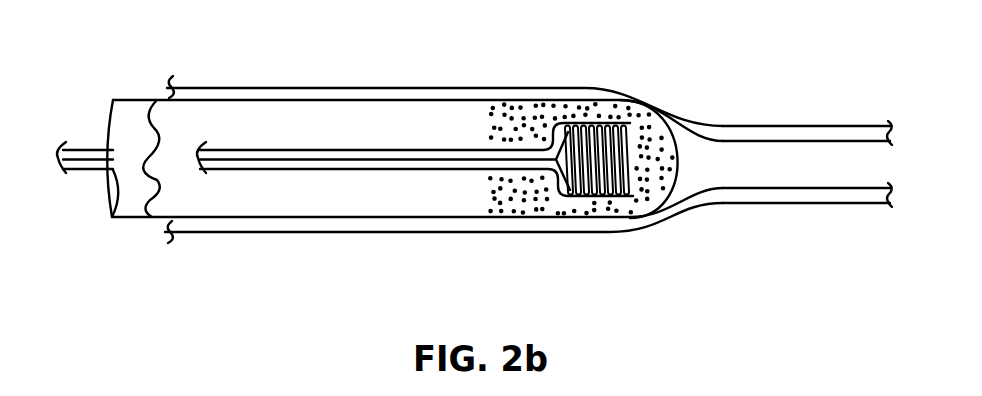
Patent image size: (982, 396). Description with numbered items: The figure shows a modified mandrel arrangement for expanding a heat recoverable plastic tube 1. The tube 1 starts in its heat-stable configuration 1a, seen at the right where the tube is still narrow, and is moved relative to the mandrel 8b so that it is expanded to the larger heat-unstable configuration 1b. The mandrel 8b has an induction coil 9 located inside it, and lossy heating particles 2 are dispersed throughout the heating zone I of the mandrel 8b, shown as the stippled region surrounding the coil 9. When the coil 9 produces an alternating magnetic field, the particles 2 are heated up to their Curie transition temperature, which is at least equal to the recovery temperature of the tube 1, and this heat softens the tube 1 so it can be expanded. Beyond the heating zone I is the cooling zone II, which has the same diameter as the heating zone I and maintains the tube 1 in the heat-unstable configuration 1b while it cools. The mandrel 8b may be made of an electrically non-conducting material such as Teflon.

The heat recoverable tube 1 is at (824, 120).
The heat-stable configuration 1a is at (823, 198).
The heat-unstable configuration 1b is at (285, 88).
The lossy heating particles 2 is at (563, 114).
The mandrel 8b is at (417, 107).
The induction coil 9 is at (388, 172).
The heating zone I is at (552, 205).
The cooling zone II is at (262, 200).